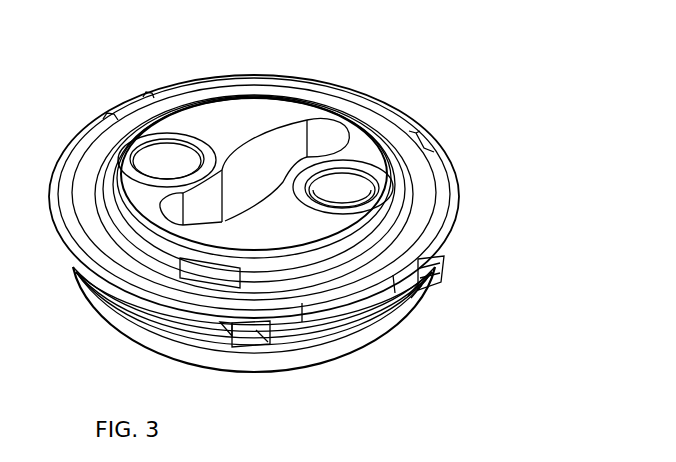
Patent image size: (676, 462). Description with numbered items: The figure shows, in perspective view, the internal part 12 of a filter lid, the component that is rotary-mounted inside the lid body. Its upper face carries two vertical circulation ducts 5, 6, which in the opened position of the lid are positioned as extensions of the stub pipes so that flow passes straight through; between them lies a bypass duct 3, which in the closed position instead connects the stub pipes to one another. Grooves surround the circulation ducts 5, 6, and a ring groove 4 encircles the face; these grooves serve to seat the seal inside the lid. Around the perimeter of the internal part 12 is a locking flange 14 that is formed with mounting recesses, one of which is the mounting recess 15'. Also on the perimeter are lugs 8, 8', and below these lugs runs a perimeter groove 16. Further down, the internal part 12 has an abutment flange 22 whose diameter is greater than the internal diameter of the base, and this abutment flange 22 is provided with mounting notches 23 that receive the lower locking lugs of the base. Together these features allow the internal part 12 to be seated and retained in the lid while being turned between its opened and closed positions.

The internal part 12 is at (100, 75).
The bypass duct 3 is at (261, 160).
The ring groove 4 is at (228, 88).
The circulation duct 5 is at (163, 157).
The circulation duct 6 is at (347, 180).
The locking flange 14 is at (350, 87).
The mounting recess 15' is at (447, 127).
The abutment flange 22 is at (455, 240).
The lug 8 is at (263, 361).
The lug 8' is at (461, 280).
The mounting notch 23 is at (360, 293).
The perimeter groove 16 is at (335, 342).